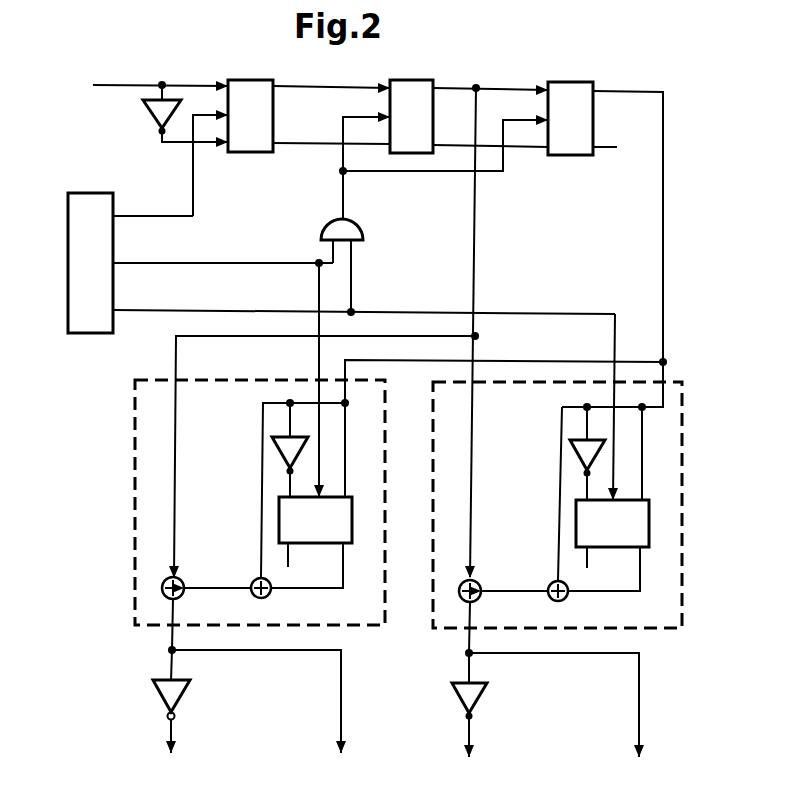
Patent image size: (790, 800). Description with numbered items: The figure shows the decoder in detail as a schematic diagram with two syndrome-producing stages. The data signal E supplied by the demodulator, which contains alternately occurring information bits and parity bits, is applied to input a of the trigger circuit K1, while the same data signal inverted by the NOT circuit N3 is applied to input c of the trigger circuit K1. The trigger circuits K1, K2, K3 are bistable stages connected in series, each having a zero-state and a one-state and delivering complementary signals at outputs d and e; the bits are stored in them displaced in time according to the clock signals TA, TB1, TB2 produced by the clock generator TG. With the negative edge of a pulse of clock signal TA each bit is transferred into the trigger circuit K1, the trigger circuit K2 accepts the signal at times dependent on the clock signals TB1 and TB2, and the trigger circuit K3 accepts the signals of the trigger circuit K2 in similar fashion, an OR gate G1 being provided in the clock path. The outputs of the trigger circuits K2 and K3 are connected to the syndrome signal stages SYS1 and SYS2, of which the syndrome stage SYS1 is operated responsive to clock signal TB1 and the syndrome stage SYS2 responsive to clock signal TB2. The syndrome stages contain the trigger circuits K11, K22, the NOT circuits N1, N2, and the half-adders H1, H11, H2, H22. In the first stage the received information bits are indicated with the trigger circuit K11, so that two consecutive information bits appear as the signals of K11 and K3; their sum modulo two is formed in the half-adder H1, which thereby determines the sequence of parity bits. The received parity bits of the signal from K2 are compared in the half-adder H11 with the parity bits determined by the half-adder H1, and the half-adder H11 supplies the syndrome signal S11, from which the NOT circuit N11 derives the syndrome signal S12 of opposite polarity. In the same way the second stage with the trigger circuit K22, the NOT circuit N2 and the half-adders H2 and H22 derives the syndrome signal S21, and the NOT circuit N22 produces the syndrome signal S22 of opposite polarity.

The data signal E is at (150, 88).
The NOT circuit N3 is at (152, 113).
The trigger circuit K1 is at (242, 138).
The trigger circuit K2 is at (410, 139).
The trigger circuit K3 is at (548, 234).
The clock generator TG is at (90, 263).
The clock signal TA is at (153, 202).
The clock signal TB1 is at (223, 365).
The clock signal TB2 is at (365, 390).
The OR gate G1 is at (362, 226).
The syndrome signal stage SYS1 is at (272, 380).
The syndrome signal stage SYS2 is at (683, 404).
The NOT circuit N1 is at (302, 445).
The NOT circuit N2 is at (574, 446).
The trigger circuit K11 is at (316, 529).
The trigger circuit K22 is at (613, 499).
The half-adder H1 is at (254, 578).
The half-adder H2 is at (551, 582).
The half-adder H11 is at (182, 596).
The half-adder H22 is at (479, 600).
The NOT circuit N11 is at (180, 694).
The NOT circuit N22 is at (479, 695).
The syndrome signal S11 is at (166, 755).
The syndrome signal S12 is at (264, 720).
The syndrome signal S21 is at (472, 755).
The syndrome signal S22 is at (564, 722).